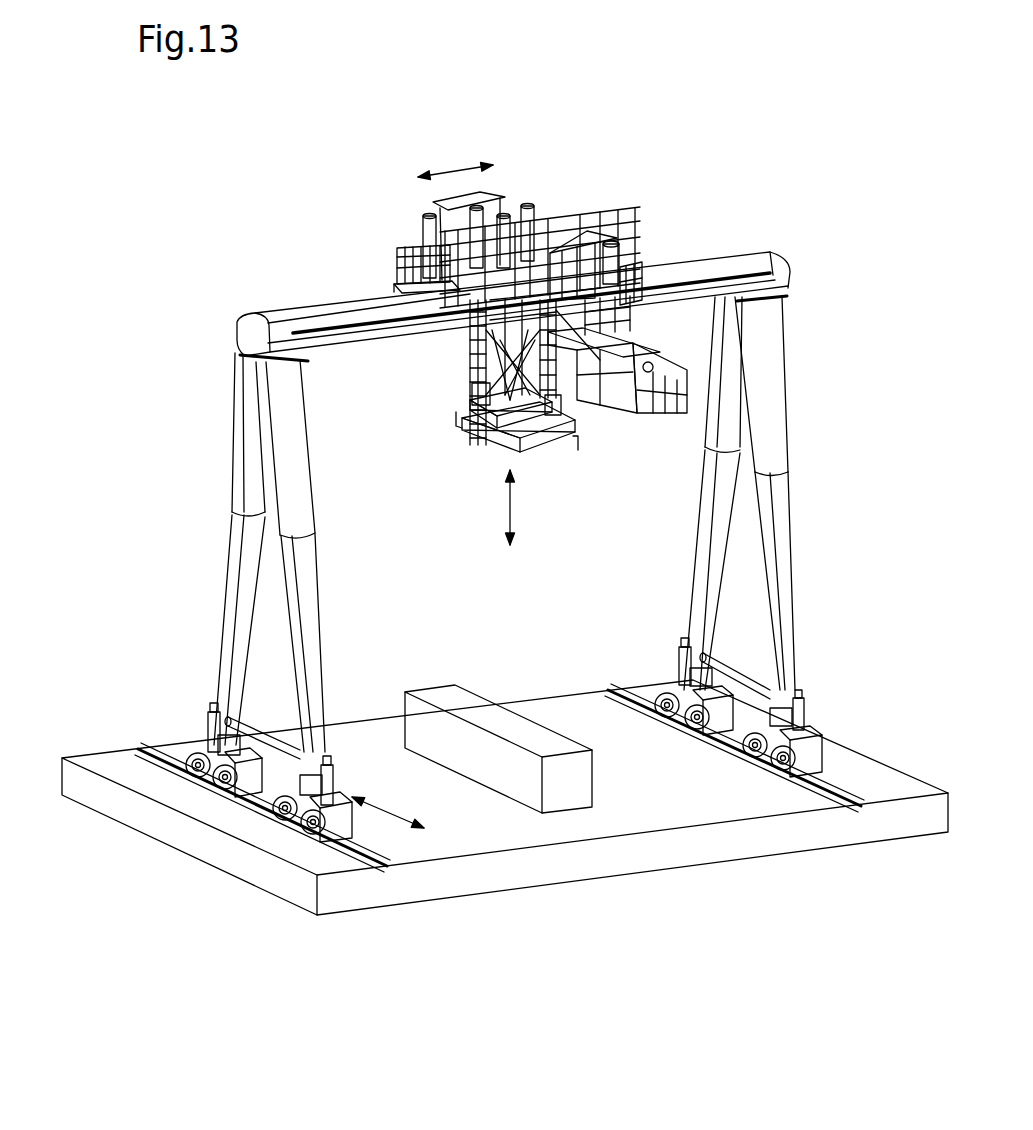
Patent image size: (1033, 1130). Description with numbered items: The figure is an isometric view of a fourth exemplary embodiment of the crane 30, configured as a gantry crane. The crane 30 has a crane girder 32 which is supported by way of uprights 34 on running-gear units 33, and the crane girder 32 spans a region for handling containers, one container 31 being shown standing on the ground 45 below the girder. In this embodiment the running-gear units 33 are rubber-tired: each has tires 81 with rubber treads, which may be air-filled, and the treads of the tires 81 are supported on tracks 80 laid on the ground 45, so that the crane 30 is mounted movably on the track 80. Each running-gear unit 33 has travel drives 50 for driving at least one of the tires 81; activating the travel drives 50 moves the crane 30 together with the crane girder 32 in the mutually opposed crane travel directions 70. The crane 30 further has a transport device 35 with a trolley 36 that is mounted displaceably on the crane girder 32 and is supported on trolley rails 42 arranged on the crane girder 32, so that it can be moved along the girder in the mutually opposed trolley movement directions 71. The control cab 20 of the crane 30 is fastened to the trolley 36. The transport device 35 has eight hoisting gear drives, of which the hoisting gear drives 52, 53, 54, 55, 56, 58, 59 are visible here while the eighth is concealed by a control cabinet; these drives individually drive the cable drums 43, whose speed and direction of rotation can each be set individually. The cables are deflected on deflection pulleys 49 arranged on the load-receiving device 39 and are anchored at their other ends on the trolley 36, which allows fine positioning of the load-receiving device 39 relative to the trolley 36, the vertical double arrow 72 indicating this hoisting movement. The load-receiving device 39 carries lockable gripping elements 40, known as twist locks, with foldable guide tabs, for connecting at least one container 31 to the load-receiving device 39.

The control cab 20 is at (647, 378).
The crane 30 is at (232, 283).
The container 31 is at (567, 800).
The crane girder 32 is at (727, 265).
The running-gear unit 33 is at (232, 750).
The upright 34 is at (290, 475).
The transport device 35 is at (588, 165).
The trolley 36 is at (418, 237).
The load-receiving device 39 is at (576, 447).
The gripping element 40 is at (572, 445).
The trolley rail 42 is at (697, 260).
The cable drum 43 is at (400, 253).
The ground 45 is at (695, 852).
The deflection pulley 49 is at (475, 392).
The travel drive 50 is at (210, 725).
The hoisting gear drive 52 is at (427, 215).
The hoisting gear drive 53 is at (476, 222).
The hoisting gear drive 54 is at (504, 214).
The hoisting gear drive 55 is at (528, 217).
The hoisting gear drive 56 is at (618, 251).
The hoisting gear drive 58 is at (552, 252).
The hoisting gear drive 59 is at (397, 268).
The crane travel direction 70 is at (390, 812).
The trolley movement direction 71 is at (458, 167).
The lifting direction 72 is at (515, 515).
The track 80 is at (363, 868).
The tire 81 is at (197, 778).